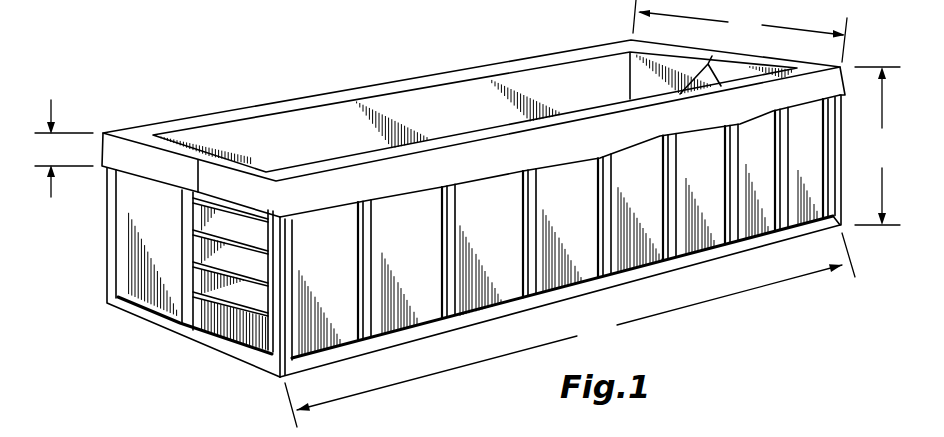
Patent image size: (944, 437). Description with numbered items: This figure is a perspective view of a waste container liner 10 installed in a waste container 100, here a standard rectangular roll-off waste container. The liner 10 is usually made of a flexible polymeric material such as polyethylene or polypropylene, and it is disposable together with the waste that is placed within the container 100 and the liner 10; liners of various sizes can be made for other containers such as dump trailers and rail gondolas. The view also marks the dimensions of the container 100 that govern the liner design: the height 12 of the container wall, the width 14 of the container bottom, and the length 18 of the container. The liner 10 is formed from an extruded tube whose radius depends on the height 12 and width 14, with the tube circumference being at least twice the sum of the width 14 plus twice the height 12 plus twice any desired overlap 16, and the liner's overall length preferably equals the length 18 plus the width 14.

The waste container liner 10 is at (473, 227).
The height 12 is at (877, 146).
The width 14 is at (740, 31).
The overlap 16 is at (64, 148).
The length 18 is at (570, 330).
The waste container 100 is at (323, 306).